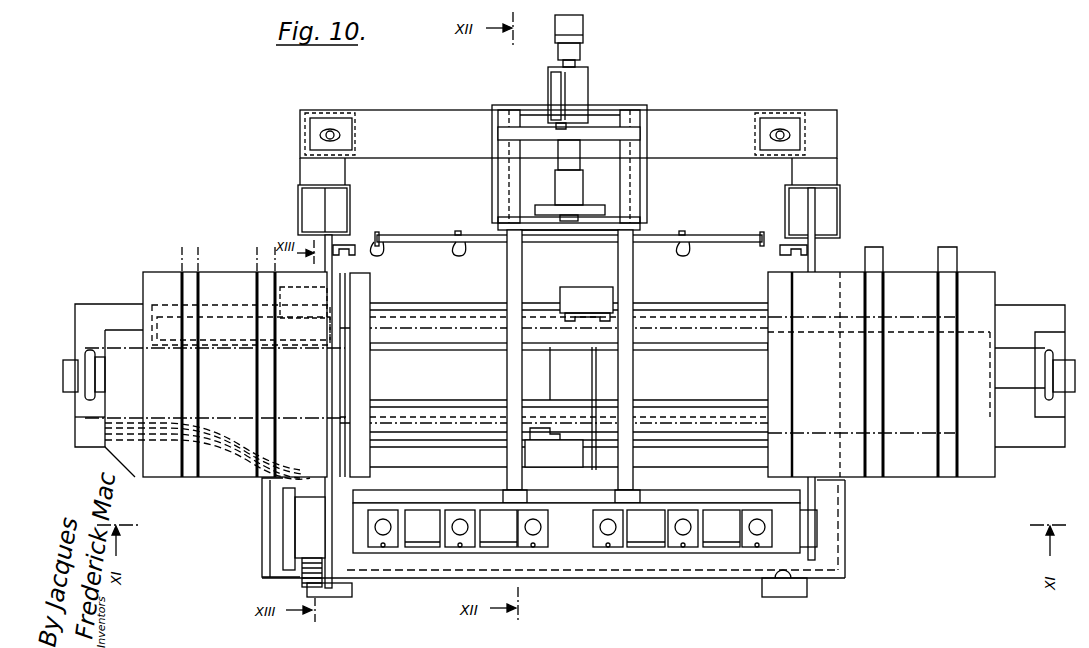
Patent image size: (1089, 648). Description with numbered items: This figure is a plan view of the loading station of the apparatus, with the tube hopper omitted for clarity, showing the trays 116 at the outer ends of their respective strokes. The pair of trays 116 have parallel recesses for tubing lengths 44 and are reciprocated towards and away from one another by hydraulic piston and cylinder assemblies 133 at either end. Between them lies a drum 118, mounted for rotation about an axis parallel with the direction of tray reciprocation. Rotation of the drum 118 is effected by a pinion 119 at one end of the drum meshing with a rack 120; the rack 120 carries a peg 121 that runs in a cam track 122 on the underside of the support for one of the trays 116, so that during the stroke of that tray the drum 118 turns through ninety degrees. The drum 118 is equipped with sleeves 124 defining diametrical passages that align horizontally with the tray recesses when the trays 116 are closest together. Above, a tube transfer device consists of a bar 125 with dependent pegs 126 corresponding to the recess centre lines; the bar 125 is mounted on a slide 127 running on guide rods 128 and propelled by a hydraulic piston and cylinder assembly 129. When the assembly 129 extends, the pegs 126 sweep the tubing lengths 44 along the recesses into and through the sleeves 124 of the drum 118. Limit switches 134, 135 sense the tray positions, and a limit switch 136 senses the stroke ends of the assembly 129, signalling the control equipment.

The tubing lengths 44 is at (255, 250).
The trays 116 is at (159, 293).
The drum 118 is at (573, 525).
The pinion 119 is at (272, 578).
The rack 120 is at (312, 492).
The peg 121 is at (270, 490).
The cam track 122 is at (221, 479).
The sleeves 124 is at (392, 550).
The bar 125 is at (402, 234).
The pegs 126 is at (376, 242).
The slide 127 is at (520, 189).
The guide rods 128 is at (514, 267).
The hydraulic piston and cylinder assembly 129 is at (567, 38).
The hydraulic piston and cylinder assemblies 133 is at (70, 377).
The limit switch 134 is at (587, 323).
The limit switch 135 is at (292, 275).
The limit switch 136 is at (575, 100).